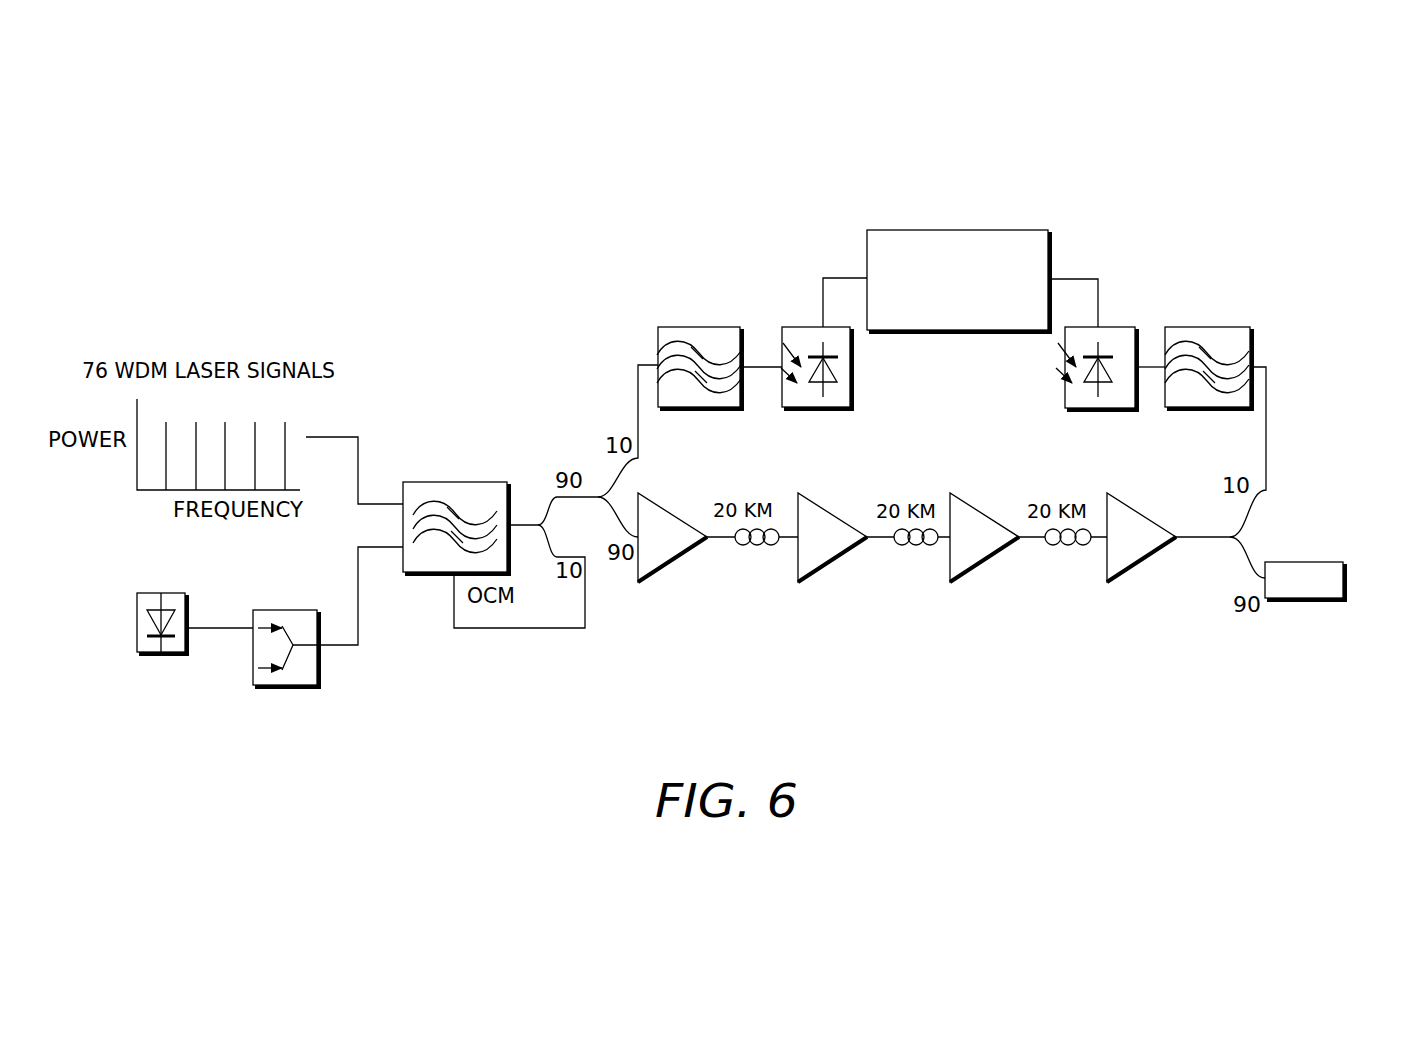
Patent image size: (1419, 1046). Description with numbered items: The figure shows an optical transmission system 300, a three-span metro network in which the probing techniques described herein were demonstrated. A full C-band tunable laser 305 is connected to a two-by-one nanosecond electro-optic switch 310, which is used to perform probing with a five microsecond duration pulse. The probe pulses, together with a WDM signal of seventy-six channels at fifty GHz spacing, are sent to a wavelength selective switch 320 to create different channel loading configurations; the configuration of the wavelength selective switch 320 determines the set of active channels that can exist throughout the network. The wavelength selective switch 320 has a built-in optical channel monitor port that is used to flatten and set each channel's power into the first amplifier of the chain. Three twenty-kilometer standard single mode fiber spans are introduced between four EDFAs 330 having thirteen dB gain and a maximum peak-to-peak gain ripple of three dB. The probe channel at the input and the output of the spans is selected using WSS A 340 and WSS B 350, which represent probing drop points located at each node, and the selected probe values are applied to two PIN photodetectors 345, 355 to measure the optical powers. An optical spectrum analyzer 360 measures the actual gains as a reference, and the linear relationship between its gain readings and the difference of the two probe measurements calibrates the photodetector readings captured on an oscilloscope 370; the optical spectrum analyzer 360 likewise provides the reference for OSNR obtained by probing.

The optical transmission system 300 is at (1345, 158).
The tunable laser 305 is at (148, 593).
The 2×1 nanosecond electro-optic switch 310 is at (285, 688).
The wavelength selective switch (WSS) 320 is at (453, 448).
The EDFAs 330 is at (680, 613).
The WSS A 340 is at (698, 293).
The PIN photodetector 345 is at (792, 325).
The WSS B 350 is at (1252, 352).
The PIN photodetector 355 is at (1118, 325).
The optical spectrum analyzer (OSA) 360 is at (1303, 560).
The oscilloscope 370 is at (957, 228).